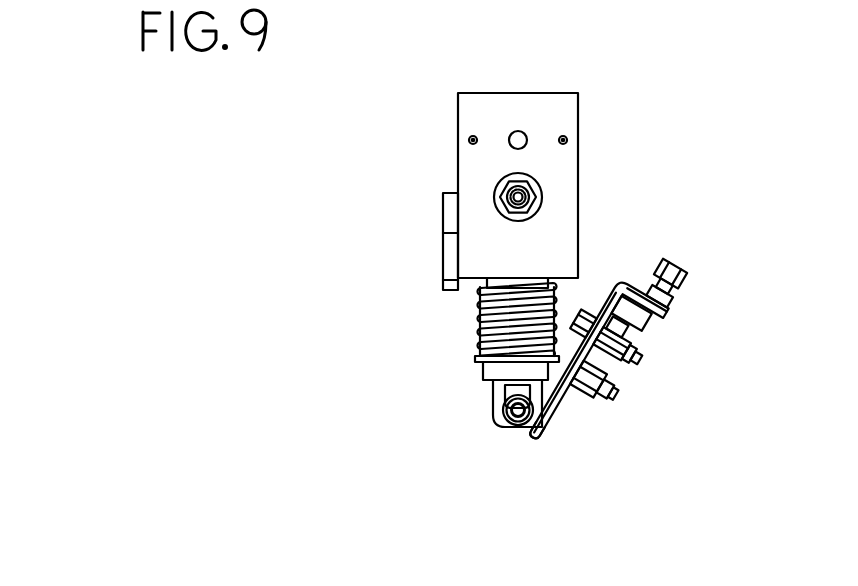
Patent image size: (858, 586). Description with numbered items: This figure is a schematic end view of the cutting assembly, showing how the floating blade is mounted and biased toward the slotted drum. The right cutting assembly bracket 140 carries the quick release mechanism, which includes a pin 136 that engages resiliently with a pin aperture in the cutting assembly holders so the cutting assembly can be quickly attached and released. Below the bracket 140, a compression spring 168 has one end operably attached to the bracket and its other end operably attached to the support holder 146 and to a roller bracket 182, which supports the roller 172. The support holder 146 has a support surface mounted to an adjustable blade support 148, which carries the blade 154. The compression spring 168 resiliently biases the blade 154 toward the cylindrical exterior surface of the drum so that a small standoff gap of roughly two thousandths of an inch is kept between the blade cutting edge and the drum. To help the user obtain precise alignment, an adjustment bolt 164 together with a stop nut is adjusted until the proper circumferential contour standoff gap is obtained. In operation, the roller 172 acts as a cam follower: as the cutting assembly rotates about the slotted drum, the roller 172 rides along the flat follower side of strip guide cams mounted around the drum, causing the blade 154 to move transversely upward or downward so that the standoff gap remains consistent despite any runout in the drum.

The pin 136 is at (525, 134).
The right cutting assembly bracket 140 is at (565, 177).
The support holder 146 is at (624, 281).
The adjustable blade support 148 is at (604, 317).
The blade 154 is at (528, 434).
The adjustment bolt 164 is at (636, 338).
The compression spring 168 is at (480, 300).
The roller 172 is at (487, 322).
The roller bracket 182 is at (497, 370).